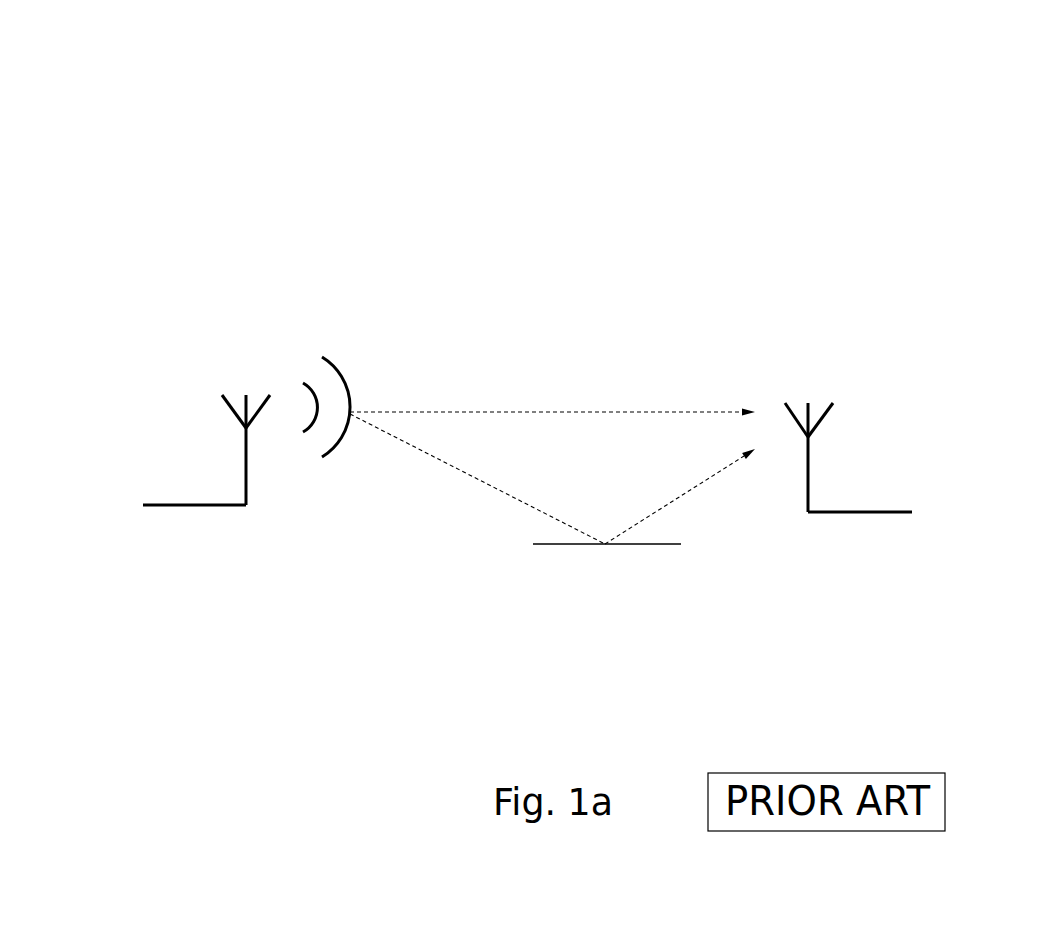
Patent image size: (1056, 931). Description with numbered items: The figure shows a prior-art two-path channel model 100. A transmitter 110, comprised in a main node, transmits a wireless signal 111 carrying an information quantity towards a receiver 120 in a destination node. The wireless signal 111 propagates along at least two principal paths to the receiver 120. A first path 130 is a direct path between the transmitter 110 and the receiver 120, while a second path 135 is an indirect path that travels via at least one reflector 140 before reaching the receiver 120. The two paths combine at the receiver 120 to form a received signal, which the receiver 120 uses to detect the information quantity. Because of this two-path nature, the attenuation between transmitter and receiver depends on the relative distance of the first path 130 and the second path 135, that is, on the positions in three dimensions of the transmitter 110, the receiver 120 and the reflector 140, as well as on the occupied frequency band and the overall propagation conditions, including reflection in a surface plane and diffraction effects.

The two-path channel model 100 is at (922, 167).
The transmitter 110 is at (246, 470).
The wireless signal 111 is at (288, 395).
The receiver 120 is at (808, 472).
The first path 130 is at (605, 412).
The second path 135 is at (688, 492).
The reflector 140 is at (602, 547).